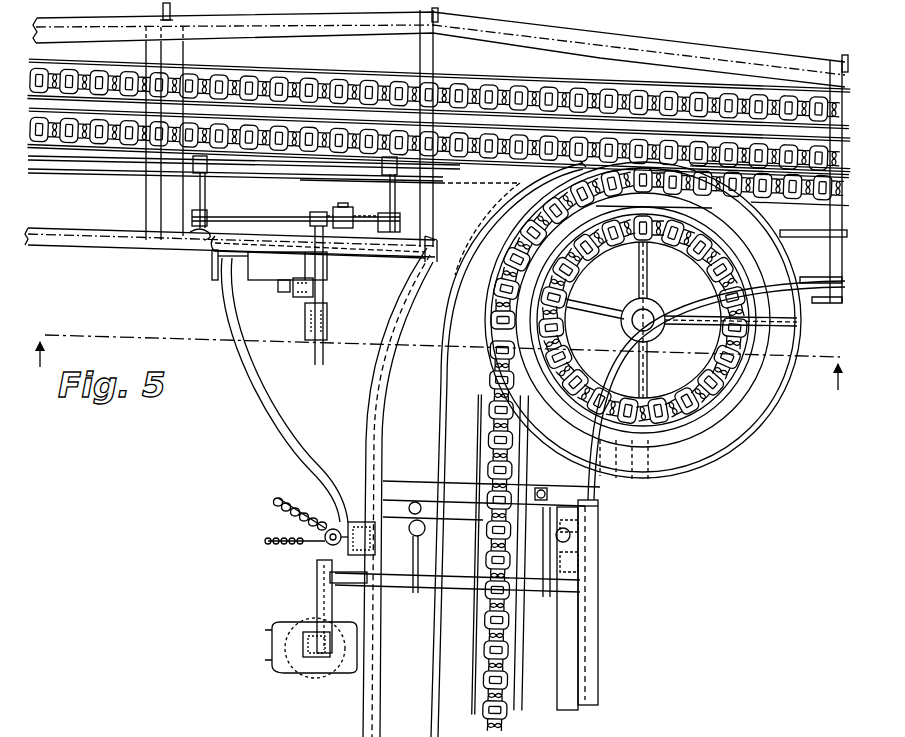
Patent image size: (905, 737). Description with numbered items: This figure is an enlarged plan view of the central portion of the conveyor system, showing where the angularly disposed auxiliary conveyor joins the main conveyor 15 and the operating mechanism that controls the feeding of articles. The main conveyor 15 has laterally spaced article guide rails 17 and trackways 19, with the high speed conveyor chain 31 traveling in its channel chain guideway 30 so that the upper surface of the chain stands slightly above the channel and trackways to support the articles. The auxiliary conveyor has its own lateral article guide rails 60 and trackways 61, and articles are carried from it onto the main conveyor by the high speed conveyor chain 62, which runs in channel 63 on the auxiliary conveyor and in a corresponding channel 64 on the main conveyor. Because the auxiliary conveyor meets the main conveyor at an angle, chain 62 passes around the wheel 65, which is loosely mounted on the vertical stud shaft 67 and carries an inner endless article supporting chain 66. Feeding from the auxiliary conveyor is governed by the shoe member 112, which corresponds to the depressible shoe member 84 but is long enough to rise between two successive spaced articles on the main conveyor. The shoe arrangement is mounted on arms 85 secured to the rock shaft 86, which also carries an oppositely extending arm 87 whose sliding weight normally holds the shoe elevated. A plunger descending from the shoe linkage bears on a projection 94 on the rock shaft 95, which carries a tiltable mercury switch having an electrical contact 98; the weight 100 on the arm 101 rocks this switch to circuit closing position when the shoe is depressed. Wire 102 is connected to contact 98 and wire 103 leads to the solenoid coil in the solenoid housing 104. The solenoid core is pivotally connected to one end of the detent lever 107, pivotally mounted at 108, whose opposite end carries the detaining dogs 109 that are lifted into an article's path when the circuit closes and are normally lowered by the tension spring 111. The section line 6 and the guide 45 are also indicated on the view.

The section line 6- 6 is at (440, 352).
The main conveyor 15 is at (723, 78).
The article guide rails 17 is at (702, 42).
The trackways 19 is at (85, 33).
The channel chain guideway 30 is at (507, 84).
The high speed conveyor chain 31 is at (553, 84).
The chain guide 45 is at (300, 130).
The lateral article guide rails 60 is at (375, 381).
The trackways 61 is at (441, 376).
The high speed conveyor chain 62 is at (498, 313).
The channel 63 is at (487, 427).
The channel 64 is at (832, 210).
The wheel 65 is at (648, 377).
The inner endless article supporting chain 66 is at (745, 362).
The vertical stud shaft 67 is at (640, 322).
The depressible shoe member 84 is at (313, 291).
The arms 85 is at (207, 189).
The rock shaft 86 is at (257, 218).
The arm 87 is at (322, 198).
The projection 94 is at (280, 288).
The rock shaft 95 is at (300, 265).
The electrical contact 98 is at (327, 325).
The weight 100 is at (220, 240).
The arm 101 is at (243, 247).
The wire 102 is at (292, 510).
The wire 103 is at (300, 540).
The solenoid housing 104 is at (278, 647).
The detent lever 107 is at (313, 600).
The pivot 108 is at (455, 582).
The detaining dogs 109 is at (420, 540).
The tension spring 111 is at (403, 527).
The shoe member 112 is at (118, 163).